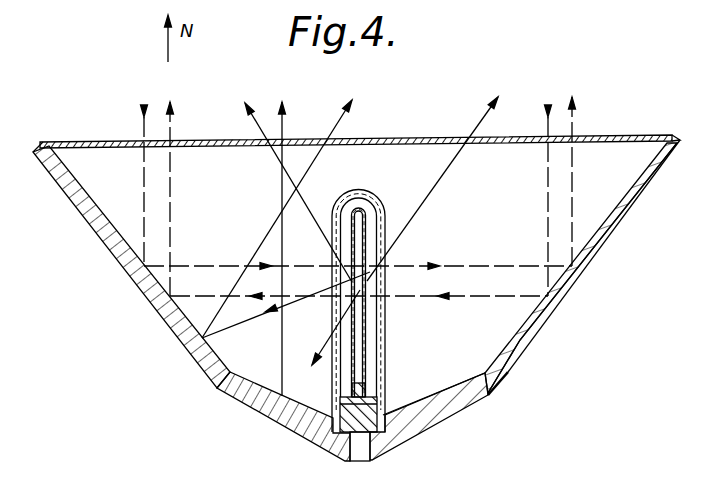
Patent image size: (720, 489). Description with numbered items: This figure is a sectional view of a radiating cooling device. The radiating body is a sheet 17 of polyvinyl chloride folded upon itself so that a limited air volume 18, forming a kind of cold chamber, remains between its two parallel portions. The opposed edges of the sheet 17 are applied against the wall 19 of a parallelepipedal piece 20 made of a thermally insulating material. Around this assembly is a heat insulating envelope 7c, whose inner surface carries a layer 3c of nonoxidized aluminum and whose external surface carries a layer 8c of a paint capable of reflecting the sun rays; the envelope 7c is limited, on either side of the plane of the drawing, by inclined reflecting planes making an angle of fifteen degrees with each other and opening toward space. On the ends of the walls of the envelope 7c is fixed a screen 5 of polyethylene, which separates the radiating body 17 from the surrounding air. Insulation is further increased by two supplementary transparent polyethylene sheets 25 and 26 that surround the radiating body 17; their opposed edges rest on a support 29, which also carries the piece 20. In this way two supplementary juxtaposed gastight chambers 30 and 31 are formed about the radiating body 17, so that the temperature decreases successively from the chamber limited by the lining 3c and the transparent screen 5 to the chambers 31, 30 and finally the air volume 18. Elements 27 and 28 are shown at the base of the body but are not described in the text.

The screen 5 is at (388, 143).
The sheet 17 is at (358, 208).
The sheet 25 is at (334, 207).
The sheet 26 is at (383, 211).
The gastight chamber 30 is at (366, 224).
The gastight chamber 31 is at (385, 237).
The air volume 18 is at (385, 315).
The wall 19 is at (384, 374).
The parallelepipedal piece 20 is at (352, 388).
The closure plate 27 is at (385, 396).
The socket block 28 is at (338, 407).
The support 29 is at (345, 428).
The layer of nonoxidized aluminum 3c is at (518, 338).
The heat insulating envelope 7c is at (461, 392).
The layer of paint 8c is at (539, 333).